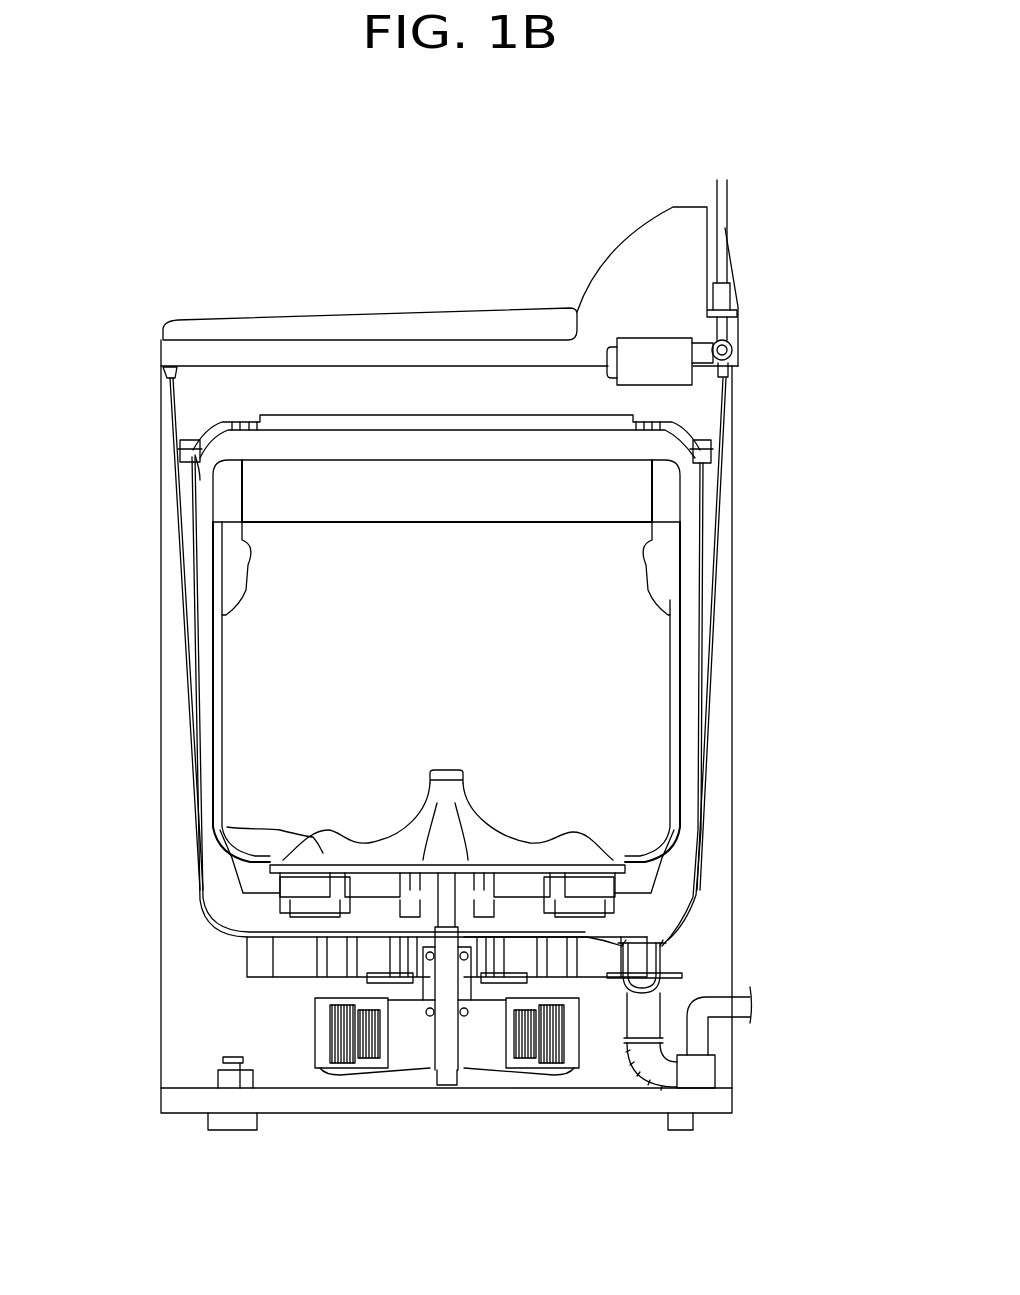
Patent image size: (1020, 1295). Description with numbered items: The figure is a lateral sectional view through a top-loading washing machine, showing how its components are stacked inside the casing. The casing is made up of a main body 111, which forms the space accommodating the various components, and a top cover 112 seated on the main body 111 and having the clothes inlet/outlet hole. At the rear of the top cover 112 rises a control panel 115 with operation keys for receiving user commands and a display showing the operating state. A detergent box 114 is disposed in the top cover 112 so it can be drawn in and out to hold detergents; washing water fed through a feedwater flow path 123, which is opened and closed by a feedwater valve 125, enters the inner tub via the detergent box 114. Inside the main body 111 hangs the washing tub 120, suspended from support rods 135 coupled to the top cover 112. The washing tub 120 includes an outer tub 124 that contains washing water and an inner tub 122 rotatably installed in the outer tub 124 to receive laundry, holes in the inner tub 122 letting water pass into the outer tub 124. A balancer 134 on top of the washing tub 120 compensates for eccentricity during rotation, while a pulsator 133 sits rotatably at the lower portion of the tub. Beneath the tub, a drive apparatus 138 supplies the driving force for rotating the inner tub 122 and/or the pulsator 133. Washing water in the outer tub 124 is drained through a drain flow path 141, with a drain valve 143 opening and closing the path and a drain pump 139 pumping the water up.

The main body 111 is at (161, 740).
The top cover 112 is at (293, 308).
The detergent box 114 is at (617, 328).
The control panel 115 is at (645, 228).
The washing tub 120 is at (87, 543).
The inner tub 122 is at (213, 643).
The feedwater flow path 123 is at (724, 207).
The outer tub 124 is at (213, 549).
The feedwater valve 125 is at (732, 340).
The pulsator 133 is at (320, 850).
The balancer 134 is at (228, 488).
The support rods 135 is at (172, 410).
The drive apparatus 138 is at (298, 1028).
The drain pump 139 is at (648, 975).
The drain flow path 141 is at (640, 1070).
The drain valve 143 is at (703, 1080).